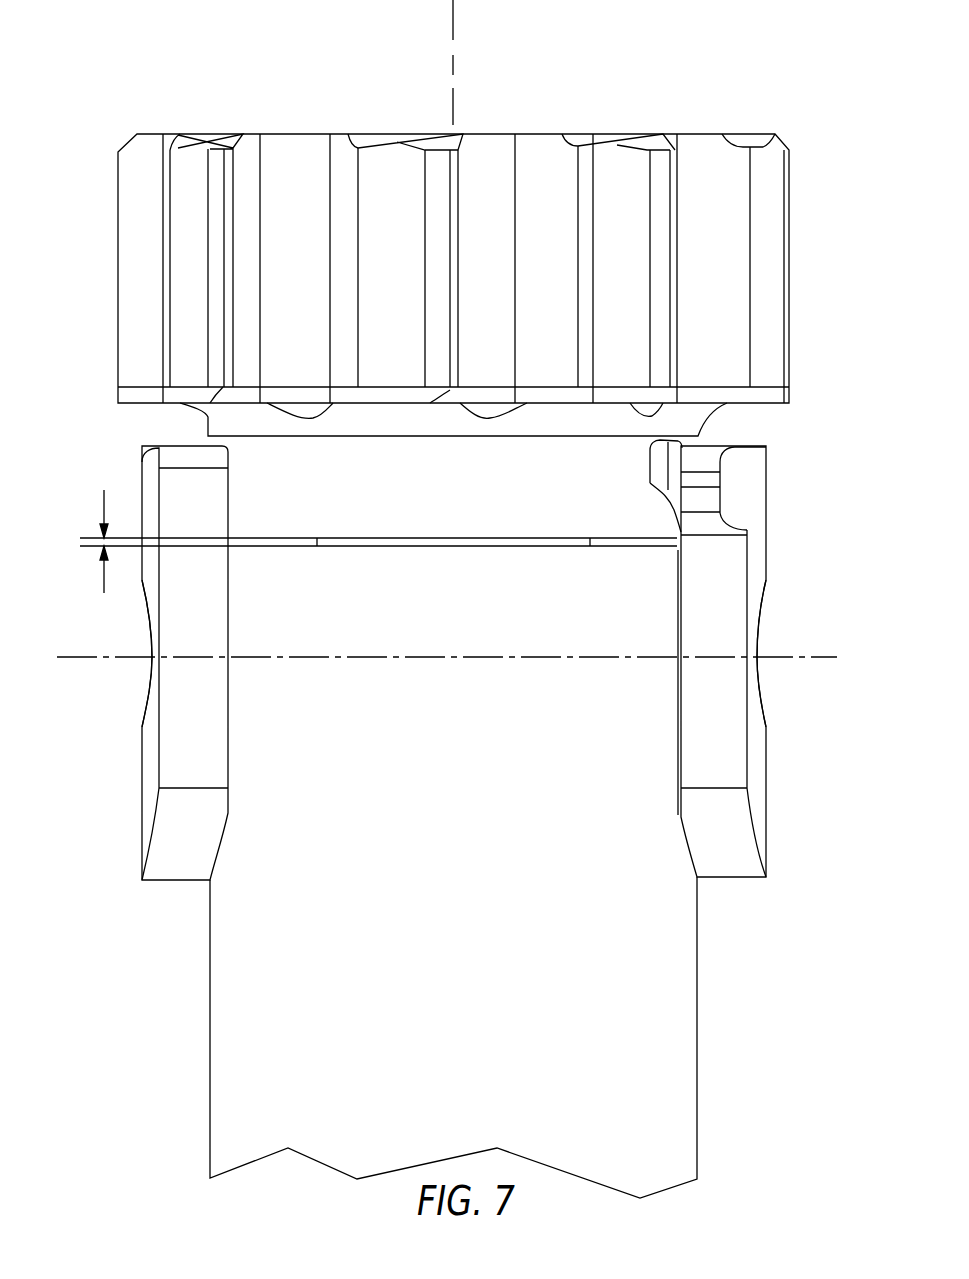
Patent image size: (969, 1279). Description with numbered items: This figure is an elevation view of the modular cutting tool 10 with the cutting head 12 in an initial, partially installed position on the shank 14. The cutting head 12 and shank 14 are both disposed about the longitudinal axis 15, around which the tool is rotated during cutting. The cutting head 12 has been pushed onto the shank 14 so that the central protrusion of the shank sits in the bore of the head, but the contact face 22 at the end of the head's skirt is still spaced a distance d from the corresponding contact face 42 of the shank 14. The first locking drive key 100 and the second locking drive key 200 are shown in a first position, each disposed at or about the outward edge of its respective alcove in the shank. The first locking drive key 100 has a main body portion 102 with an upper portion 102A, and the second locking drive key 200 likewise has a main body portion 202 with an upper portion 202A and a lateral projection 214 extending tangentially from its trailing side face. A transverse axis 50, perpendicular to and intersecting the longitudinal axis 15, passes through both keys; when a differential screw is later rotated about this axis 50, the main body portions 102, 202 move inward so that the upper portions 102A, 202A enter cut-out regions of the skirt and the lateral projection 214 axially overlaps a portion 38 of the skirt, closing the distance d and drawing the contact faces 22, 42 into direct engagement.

The modular cutting tool 10 is at (98, 157).
The cutting head 12 is at (795, 238).
The shank 14 is at (665, 967).
The longitudinal axis 15 is at (450, 42).
The contact face 22 is at (613, 546).
The portion of skirt 38 is at (656, 512).
The contact face 42 is at (522, 543).
The transverse axis 50 is at (78, 657).
The first locking drive key 100 is at (180, 766).
The main body portion 102 is at (175, 722).
The upper portion 102A is at (205, 490).
The second locking drive key 200 is at (728, 745).
The main body portion 202 is at (732, 705).
The upper portion 202A is at (768, 467).
The lateral projection 214 is at (730, 480).
The distance d is at (104, 527).